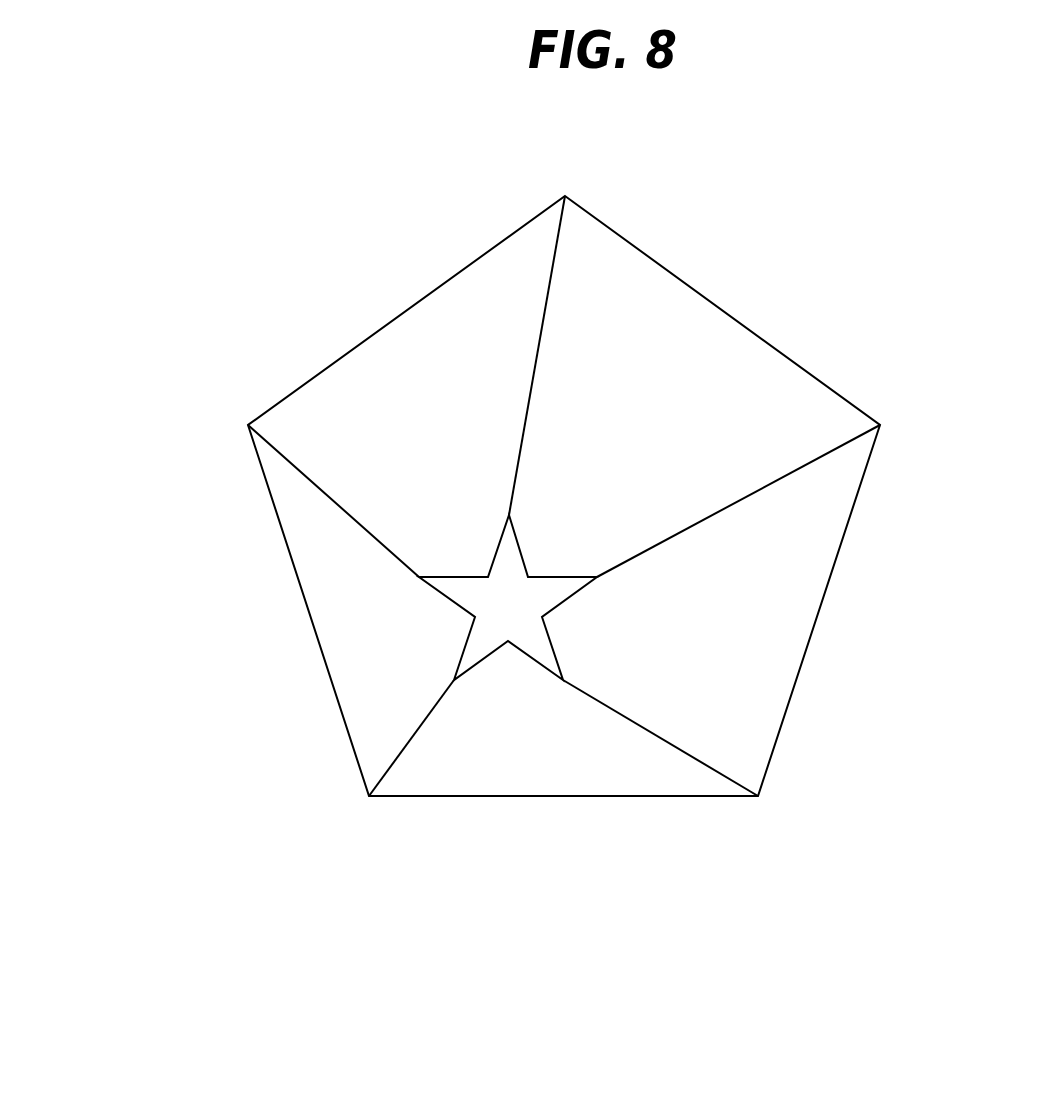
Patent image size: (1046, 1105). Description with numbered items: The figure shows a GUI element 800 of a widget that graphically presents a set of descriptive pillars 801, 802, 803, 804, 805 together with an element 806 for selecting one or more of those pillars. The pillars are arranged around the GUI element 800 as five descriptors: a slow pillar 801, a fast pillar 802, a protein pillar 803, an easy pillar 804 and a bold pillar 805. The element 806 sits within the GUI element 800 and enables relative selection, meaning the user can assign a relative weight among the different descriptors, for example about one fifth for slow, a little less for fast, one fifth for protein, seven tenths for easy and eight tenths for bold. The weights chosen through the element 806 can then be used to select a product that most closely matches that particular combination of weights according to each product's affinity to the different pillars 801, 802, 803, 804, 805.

The GUI element 800 is at (182, 287).
The descriptive pillar 801 is at (343, 246).
The descriptive pillar 802 is at (788, 257).
The descriptive pillar 803 is at (887, 685).
The descriptive pillar 804 is at (550, 860).
The descriptive pillar 805 is at (240, 614).
The element for selecting the pillars 806 is at (525, 616).